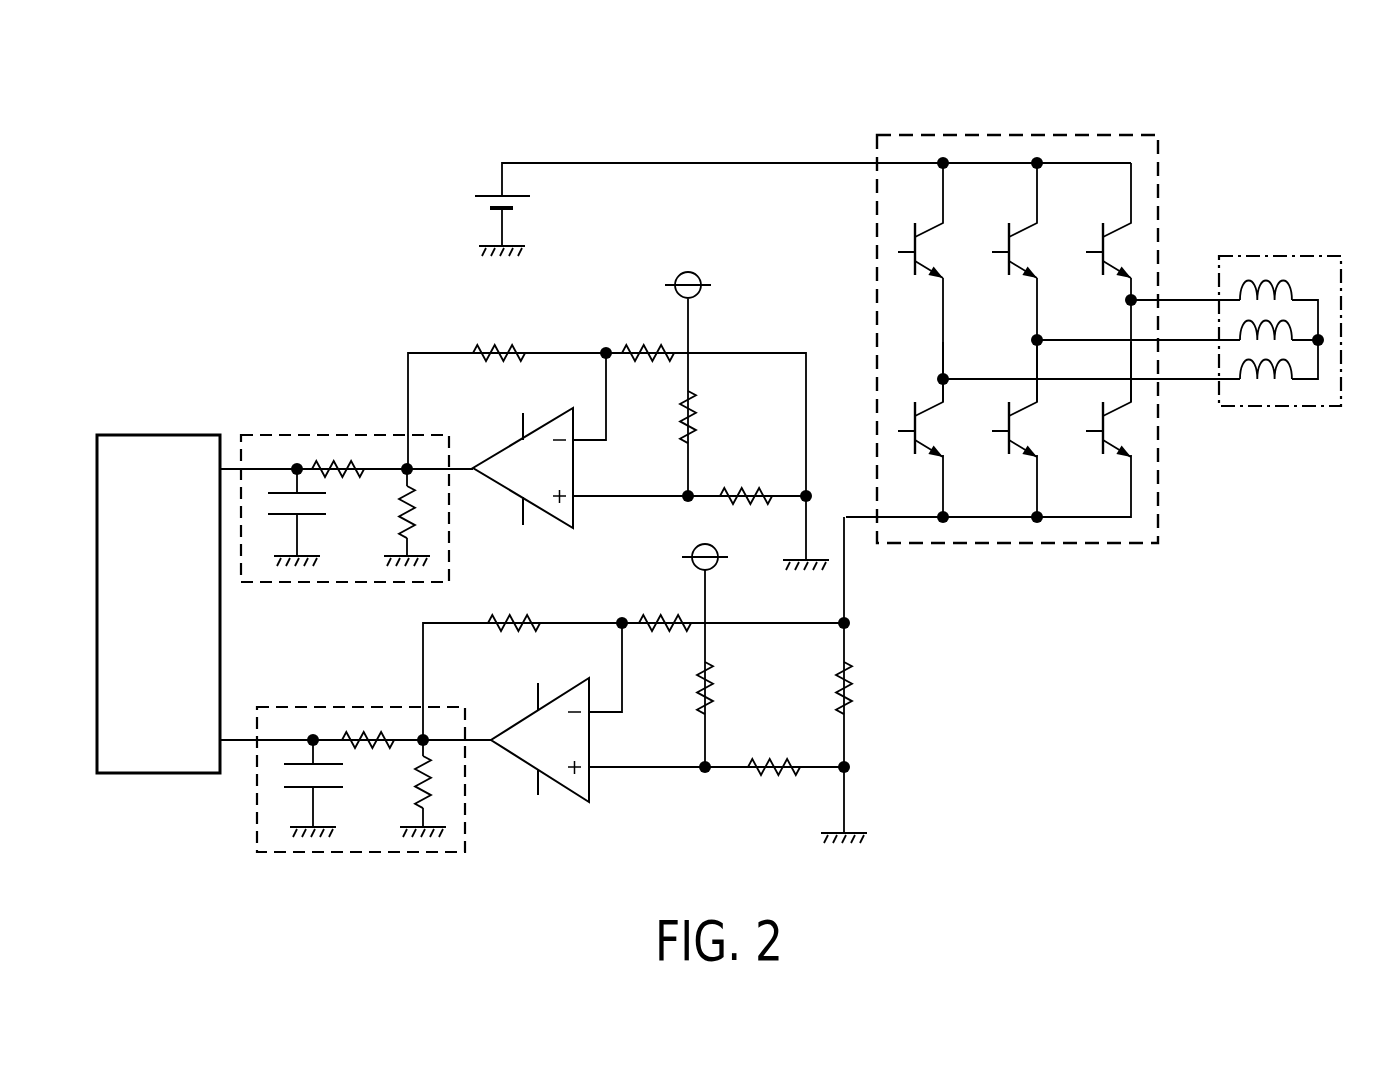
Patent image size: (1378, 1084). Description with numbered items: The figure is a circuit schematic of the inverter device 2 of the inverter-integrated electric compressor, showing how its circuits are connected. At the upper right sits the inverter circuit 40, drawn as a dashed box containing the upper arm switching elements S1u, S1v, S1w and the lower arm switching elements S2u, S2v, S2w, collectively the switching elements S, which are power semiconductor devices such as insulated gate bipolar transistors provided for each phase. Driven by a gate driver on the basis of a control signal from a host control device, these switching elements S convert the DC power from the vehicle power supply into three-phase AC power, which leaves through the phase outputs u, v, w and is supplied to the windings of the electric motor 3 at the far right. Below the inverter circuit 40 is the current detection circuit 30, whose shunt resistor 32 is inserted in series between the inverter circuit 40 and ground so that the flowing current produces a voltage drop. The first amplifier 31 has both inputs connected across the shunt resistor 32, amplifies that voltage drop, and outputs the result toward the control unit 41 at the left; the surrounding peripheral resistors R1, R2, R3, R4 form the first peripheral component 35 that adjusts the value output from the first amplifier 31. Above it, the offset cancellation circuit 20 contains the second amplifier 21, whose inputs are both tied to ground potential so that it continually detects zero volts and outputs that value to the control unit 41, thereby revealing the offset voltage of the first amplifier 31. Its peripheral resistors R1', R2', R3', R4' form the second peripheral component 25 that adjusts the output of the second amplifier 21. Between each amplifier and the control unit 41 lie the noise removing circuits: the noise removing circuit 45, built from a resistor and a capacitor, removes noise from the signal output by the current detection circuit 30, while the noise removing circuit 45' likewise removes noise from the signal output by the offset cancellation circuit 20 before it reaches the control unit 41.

The inverter device 2 is at (510, 138).
The electric motor 3 is at (1278, 408).
The offset cancellation circuit 20 is at (362, 326).
The second amplifier 21 is at (575, 468).
The second peripheral component 25 is at (730, 334).
The current detection circuit 30 is at (925, 778).
The first amplifier 31 is at (591, 740).
The shunt resistor 32 is at (850, 692).
The first peripheral component 35 is at (678, 802).
The inverter circuit 40 is at (1087, 133).
The control unit 41 is at (157, 775).
The noise removing circuit 45 is at (355, 739).
The noise removing circuit 45' is at (346, 469).
The peripheral resistor R1 is at (746, 688).
The peripheral resistor R1' is at (732, 417).
The peripheral resistor R2 is at (509, 660).
The peripheral resistor R2' is at (506, 317).
The peripheral resistor R3 is at (665, 660).
The peripheral resistor R3' is at (643, 317).
The peripheral resistor R4 is at (776, 807).
The peripheral resistor R4' is at (752, 537).
The switching elements S is at (1145, 524).
The upper arm switching element S1u is at (1102, 280).
The upper arm switching element S1v is at (1008, 280).
The upper arm switching element S1w is at (914, 280).
The lower arm switching element S2u is at (1102, 458).
The lower arm switching element S2v is at (1008, 458).
The lower arm switching element S2w is at (914, 458).
The u-phase terminal u is at (1194, 283).
The v-phase terminal v is at (1193, 323).
The w-phase terminal w is at (1196, 363).